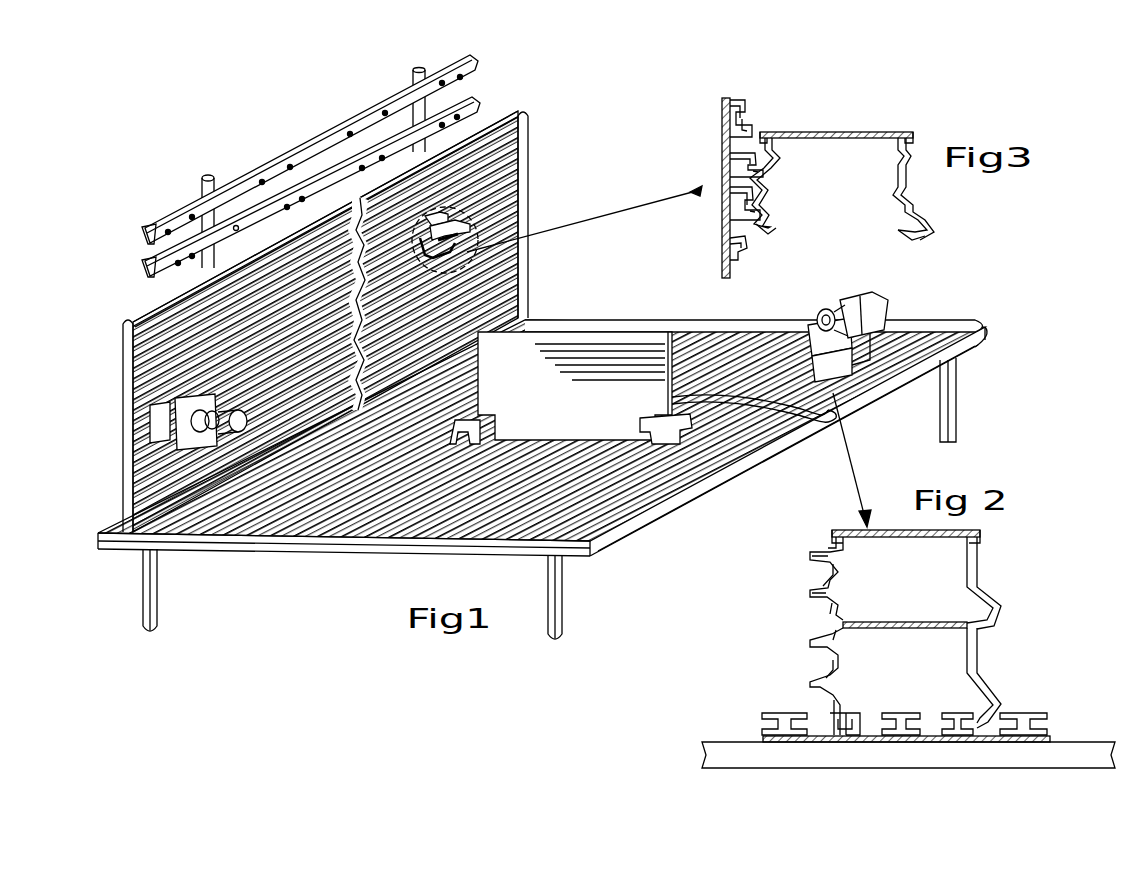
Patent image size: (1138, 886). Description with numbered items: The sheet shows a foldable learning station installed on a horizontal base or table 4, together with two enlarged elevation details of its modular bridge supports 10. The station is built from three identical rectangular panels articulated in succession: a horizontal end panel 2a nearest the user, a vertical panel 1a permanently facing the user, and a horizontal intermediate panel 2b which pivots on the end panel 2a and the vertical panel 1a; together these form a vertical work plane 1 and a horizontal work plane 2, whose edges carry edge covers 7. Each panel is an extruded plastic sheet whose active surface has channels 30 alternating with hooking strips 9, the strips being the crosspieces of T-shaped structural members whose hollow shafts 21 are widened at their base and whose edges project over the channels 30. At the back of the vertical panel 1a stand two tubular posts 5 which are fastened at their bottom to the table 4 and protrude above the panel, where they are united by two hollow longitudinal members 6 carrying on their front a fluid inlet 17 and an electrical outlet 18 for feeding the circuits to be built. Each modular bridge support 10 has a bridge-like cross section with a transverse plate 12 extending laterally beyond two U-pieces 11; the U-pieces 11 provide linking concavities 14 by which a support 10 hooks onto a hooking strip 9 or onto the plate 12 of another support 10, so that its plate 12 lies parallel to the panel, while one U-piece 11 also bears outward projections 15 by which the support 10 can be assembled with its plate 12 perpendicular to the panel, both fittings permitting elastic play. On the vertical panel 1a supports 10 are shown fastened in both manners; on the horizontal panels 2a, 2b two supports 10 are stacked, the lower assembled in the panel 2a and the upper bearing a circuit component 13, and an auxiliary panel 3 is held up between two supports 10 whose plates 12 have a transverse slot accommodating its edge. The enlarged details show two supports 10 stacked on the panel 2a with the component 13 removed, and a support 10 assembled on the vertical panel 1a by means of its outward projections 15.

In FIG. 1, the vertical work plane 1 is at (532, 134).
In FIG. 1, the vertical panel 1a is at (500, 182).
In FIG. 1, the horizontal work plane 2 is at (935, 312).
In FIG. 1, the horizontal end panel 2a is at (988, 333).
In FIG. 1, the horizontal intermediate panel 2b is at (307, 523).
In FIG. 1, the auxiliary panel 3 is at (597, 418).
In FIG. 1, the horizontal base or table 4 is at (945, 362).
In FIG. 2, the horizontal base or table 4 is at (1063, 760).
In FIG. 1, the tubular post 5 is at (412, 72).
In FIG. 1, the hollow longitudinal member 6 is at (476, 60).
In FIG. 1, the edge covers 7 is at (262, 540).
In FIG. 1, the hooking strip 9 is at (192, 345).
In FIG. 3, the hooking strip 9 is at (750, 115).
In FIG. 2, the hooking strip 9 is at (920, 709).
In FIG. 1, the modular bridge support 10 is at (490, 222).
In FIG. 3, the modular bridge support 10 is at (918, 188).
In FIG. 2, the modular bridge support 10 is at (983, 652).
In FIG. 3, the U-piece of support 11 is at (752, 193).
In FIG. 2, the U-piece of support 11 is at (977, 555).
In FIG. 3, the transverse plate of support 12 is at (825, 135).
In FIG. 1, the circuit component 13 is at (238, 425).
In FIG. 3, the linking concavities 14 is at (770, 224).
In FIG. 2, the outward projections 15 is at (810, 558).
In FIG. 1, the fluid inlet 17 is at (290, 167).
In FIG. 1, the electrical outlet 18 is at (245, 223).
In FIG. 3, the hollow shaft 21 is at (737, 240).
In FIG. 2, the hollow shaft 21 is at (847, 720).
In FIG. 2, the channel 30 is at (993, 722).